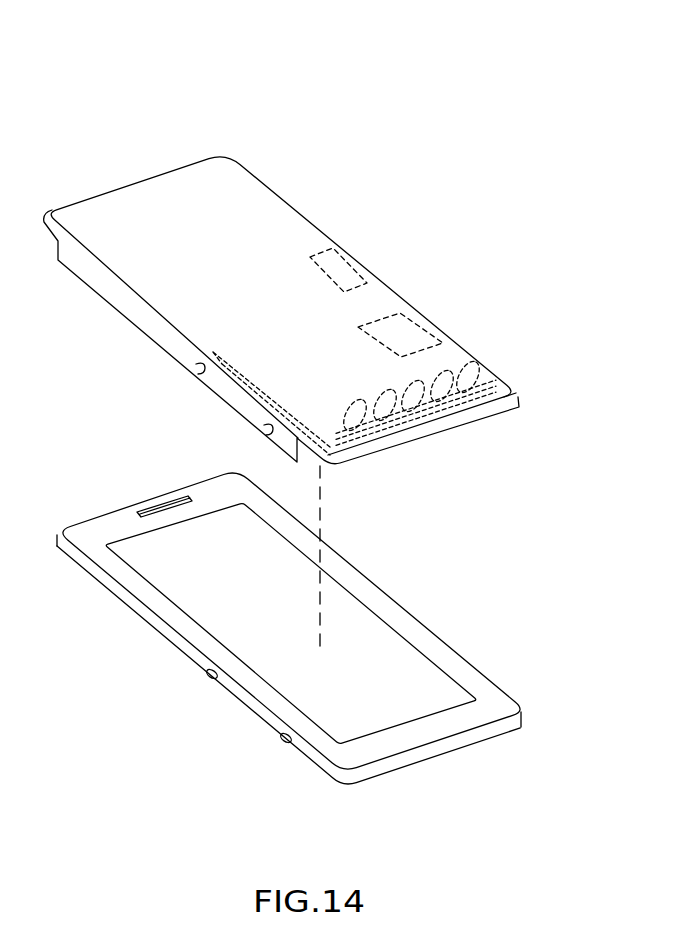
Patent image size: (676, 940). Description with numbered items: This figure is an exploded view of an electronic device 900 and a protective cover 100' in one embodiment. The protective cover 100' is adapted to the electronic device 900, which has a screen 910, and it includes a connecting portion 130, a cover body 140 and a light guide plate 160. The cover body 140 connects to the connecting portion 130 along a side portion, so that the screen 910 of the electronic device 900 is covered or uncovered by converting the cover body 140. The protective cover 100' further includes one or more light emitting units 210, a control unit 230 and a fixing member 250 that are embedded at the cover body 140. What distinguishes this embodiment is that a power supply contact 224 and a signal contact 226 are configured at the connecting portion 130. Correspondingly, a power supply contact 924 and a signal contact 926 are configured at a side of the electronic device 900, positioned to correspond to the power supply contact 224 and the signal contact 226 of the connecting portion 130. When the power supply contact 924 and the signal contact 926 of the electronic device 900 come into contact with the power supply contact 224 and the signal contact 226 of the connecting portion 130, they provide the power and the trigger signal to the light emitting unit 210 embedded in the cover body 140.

The protective cover 100' is at (300, 56).
The connecting portion 130 is at (138, 312).
The cover body 140 is at (143, 194).
The light guide plate 160 is at (505, 415).
The light emitting unit 210 is at (460, 388).
The power supply contact 224 is at (198, 366).
The signal contact 226 is at (270, 430).
The control unit 230 is at (430, 333).
The fixing member 250 is at (325, 252).
The electronic device 900 is at (397, 597).
The screen 910 is at (415, 680).
The power supply contact 924 is at (214, 676).
The signal contact 926 is at (284, 738).